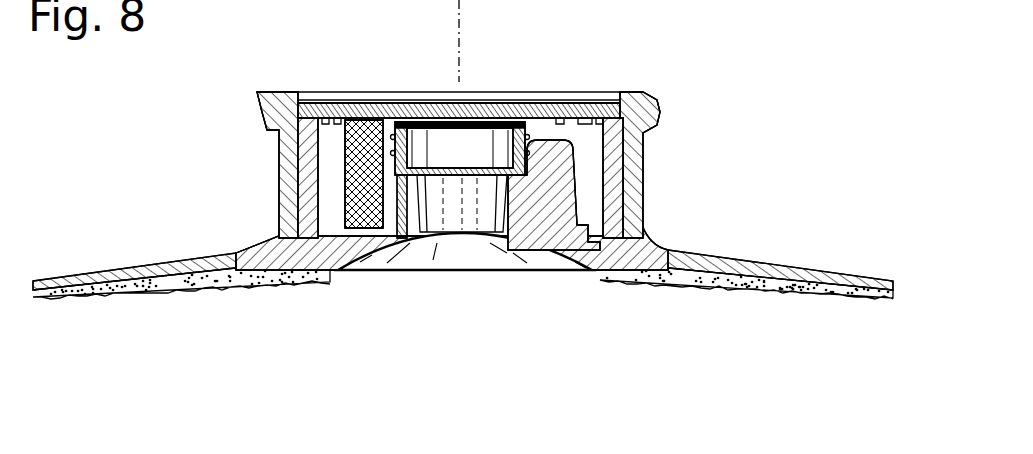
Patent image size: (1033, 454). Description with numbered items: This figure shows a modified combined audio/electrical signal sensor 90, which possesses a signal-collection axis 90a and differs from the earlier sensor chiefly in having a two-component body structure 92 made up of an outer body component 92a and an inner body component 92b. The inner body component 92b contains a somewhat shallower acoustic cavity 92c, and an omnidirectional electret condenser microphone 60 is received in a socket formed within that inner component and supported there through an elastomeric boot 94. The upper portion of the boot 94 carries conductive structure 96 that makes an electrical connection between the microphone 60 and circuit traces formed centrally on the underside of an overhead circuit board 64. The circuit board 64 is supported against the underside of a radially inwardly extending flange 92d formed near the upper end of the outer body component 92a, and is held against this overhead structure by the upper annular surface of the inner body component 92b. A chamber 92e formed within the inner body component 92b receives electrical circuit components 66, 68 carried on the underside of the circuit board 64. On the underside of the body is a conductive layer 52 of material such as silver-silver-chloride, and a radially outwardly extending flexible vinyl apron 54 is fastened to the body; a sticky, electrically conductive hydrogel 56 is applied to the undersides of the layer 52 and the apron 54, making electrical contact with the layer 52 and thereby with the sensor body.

The conductive layer 52 is at (238, 275).
The flexible vinyl apron 54 is at (463, 281).
The conductive hydrogel 56 is at (698, 283).
The electret condenser microphone 60 is at (460, 141).
The circuit board 64 is at (570, 107).
The electrical circuit component 66 is at (322, 124).
The electrical circuit component 68 is at (586, 125).
The sensor 90 is at (416, 164).
The signal-collection axis 90a is at (550, 36).
The two-component body structure 92 is at (462, 185).
The outer body component 92a is at (290, 210).
The inner body component 92b is at (313, 255).
The acoustic cavity 92c is at (560, 260).
The radially inwardly extending flange 92d is at (350, 70).
The chamber 92e is at (587, 194).
The elastomeric boot 94 is at (537, 135).
The conductive structure 96 is at (457, 130).